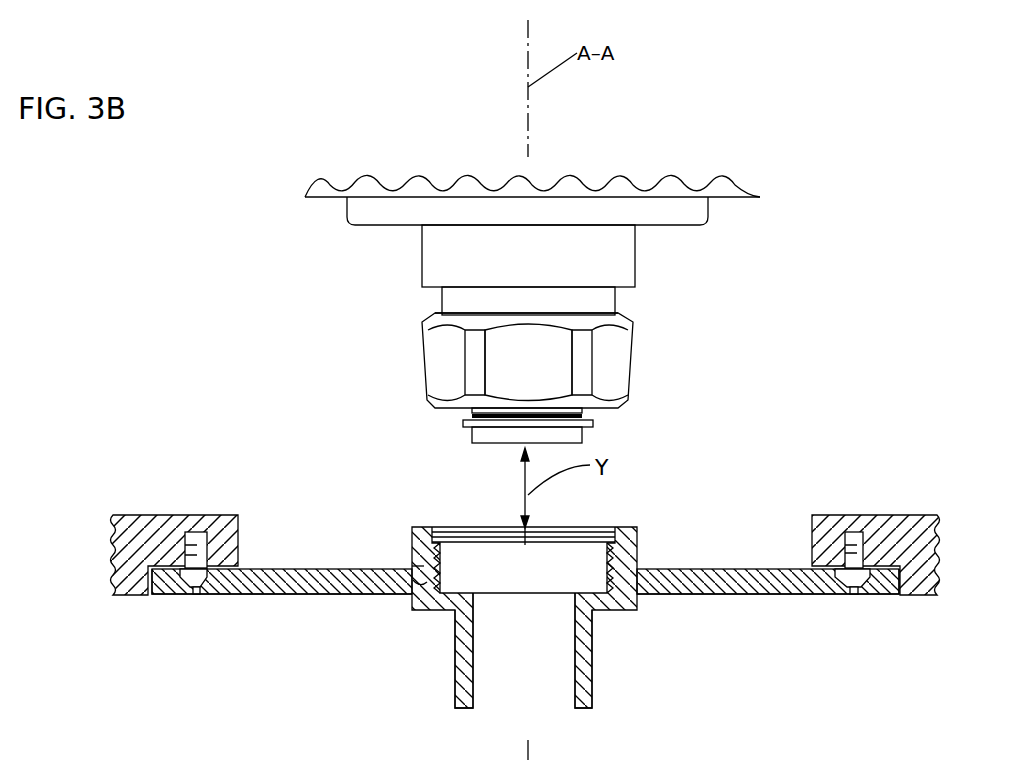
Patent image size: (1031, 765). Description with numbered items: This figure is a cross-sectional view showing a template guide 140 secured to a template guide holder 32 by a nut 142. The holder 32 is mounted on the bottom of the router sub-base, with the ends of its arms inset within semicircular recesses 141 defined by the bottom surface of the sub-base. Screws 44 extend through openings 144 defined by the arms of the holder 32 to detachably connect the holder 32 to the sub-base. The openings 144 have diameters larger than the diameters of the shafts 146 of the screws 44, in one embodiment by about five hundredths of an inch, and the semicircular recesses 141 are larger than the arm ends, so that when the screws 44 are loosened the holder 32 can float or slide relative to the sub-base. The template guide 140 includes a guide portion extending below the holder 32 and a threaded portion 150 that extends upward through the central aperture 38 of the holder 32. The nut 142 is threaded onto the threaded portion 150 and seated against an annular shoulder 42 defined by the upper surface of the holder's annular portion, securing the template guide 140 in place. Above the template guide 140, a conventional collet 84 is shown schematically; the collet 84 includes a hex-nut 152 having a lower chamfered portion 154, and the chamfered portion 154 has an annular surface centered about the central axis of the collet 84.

The template guide holder 32 is at (752, 555).
The central aperture 38 is at (414, 581).
The annular shoulder 42 is at (412, 568).
The screws 44 is at (208, 595).
The collet 84 is at (615, 300).
The template guide 140 is at (462, 697).
The semicircular recesses 141 is at (148, 572).
The nut 142 is at (637, 532).
The openings 144 is at (220, 585).
The shafts 146 is at (200, 553).
The threaded portion 150 is at (460, 528).
The hex-nut 152 is at (623, 353).
The chamfered portion 154 is at (613, 400).